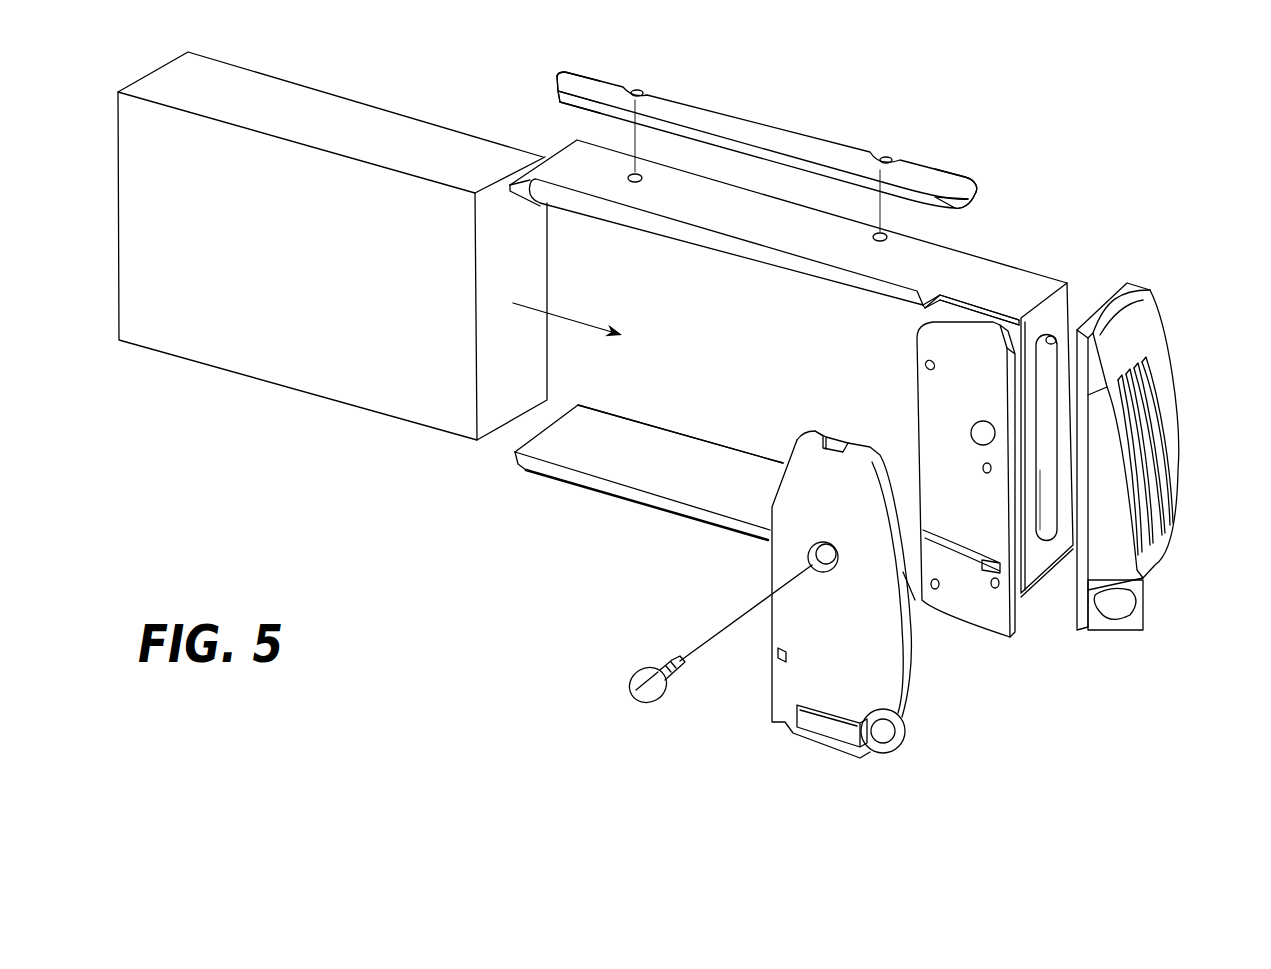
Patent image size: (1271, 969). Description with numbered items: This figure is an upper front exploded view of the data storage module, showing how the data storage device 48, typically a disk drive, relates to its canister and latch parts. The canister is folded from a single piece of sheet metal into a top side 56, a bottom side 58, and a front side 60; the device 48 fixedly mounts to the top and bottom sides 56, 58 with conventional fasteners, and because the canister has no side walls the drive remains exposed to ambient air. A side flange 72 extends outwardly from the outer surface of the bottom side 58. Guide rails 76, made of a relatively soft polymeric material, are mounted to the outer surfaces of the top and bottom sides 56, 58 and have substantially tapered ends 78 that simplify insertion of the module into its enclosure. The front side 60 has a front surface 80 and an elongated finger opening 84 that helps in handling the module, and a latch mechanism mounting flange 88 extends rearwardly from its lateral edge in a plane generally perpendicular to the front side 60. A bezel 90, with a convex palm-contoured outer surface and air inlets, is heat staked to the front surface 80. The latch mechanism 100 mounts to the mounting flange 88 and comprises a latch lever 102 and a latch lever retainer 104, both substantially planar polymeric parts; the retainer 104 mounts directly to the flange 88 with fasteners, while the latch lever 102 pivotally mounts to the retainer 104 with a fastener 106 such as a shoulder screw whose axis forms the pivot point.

The data storage device 48 is at (313, 380).
The top side 56 is at (560, 150).
The bottom side 58 is at (572, 428).
The front side 60 is at (1072, 462).
The side flange 72 is at (526, 470).
The guide rail 76 is at (768, 130).
The tapered end 78 is at (548, 58).
The front surface 80 is at (1033, 320).
The elongated finger opening 84 is at (1046, 333).
The latch mechanism mounting flange 88 is at (940, 308).
The bezel 90 is at (1188, 458).
The latch mechanism 100 is at (781, 546).
The latch lever 102 is at (775, 694).
The latch lever retainer 104 is at (983, 620).
The fastener 106 is at (650, 707).